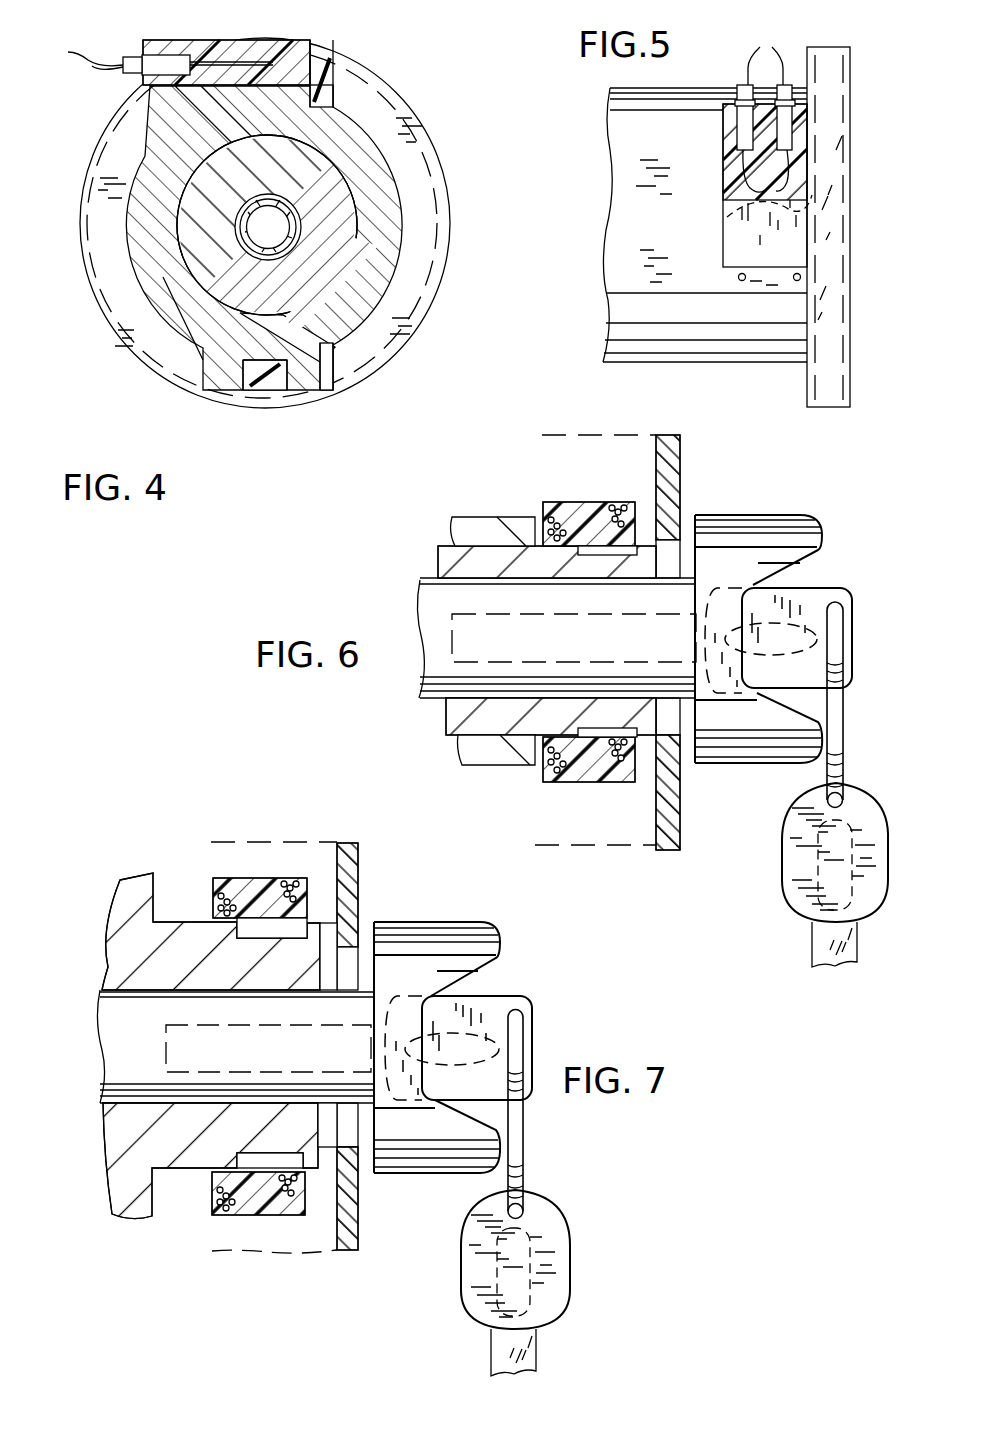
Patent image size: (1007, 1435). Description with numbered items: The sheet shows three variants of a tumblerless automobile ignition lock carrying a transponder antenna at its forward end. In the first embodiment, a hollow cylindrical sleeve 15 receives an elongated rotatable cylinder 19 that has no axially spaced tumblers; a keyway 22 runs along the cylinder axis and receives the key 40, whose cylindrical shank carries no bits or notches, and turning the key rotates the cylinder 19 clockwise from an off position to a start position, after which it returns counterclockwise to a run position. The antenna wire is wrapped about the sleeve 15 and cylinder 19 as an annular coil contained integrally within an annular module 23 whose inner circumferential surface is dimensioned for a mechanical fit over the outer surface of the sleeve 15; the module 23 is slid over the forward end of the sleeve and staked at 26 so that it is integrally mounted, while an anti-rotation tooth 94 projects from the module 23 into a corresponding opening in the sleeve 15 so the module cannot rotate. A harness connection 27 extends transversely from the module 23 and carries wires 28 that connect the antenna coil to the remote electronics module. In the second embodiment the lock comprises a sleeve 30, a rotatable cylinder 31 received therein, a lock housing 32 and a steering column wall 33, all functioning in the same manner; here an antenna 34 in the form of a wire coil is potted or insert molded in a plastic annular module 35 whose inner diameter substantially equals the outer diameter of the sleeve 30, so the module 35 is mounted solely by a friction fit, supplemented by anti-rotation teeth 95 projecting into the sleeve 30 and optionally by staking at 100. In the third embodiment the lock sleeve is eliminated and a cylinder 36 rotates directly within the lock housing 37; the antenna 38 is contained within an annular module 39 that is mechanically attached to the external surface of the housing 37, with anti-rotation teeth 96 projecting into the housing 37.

In FIG. 4, the sleeve 15 is at (193, 312).
In FIG. 5, the sleeve 15 is at (624, 306).
In FIG. 4, the cylinder 19 is at (340, 190).
In FIG. 4, the keyway 22 is at (246, 224).
In FIG. 4, the module 23 is at (378, 348).
In FIG. 5, the module 23 is at (832, 288).
In FIG. 4, the staking 26 is at (318, 48).
In FIG. 5, the staking 26 is at (796, 282).
In FIG. 4, the harness connection 27 is at (214, 46).
In FIG. 5, the harness connection 27 is at (722, 190).
In FIG. 4, the wires 28 is at (68, 52).
In FIG. 5, the wires 28 is at (760, 47).
In FIG. 4, the key 40 is at (293, 240).
In FIG. 4, the tooth 94 is at (270, 394).
In FIG. 6, the sleeve 30 is at (449, 561).
In FIG. 6, the rotatable cylinder 31 is at (437, 664).
In FIG. 6, the lock housing 32 is at (464, 526).
In FIG. 6, the steering column wall 33 is at (674, 463).
In FIG. 6, the antenna 34 is at (624, 501).
In FIG. 6, the module 35 is at (551, 525).
In FIG. 6, the teeth 95 is at (600, 550).
In FIG. 6, the staking 100 is at (660, 550).
In FIG. 7, the cylinder 36 is at (122, 1035).
In FIG. 7, the lock housing 37 is at (148, 940).
In FIG. 7, the antenna 38 is at (283, 878).
In FIG. 7, the module 39 is at (225, 878).
In FIG. 7, the teeth 96 is at (270, 940).